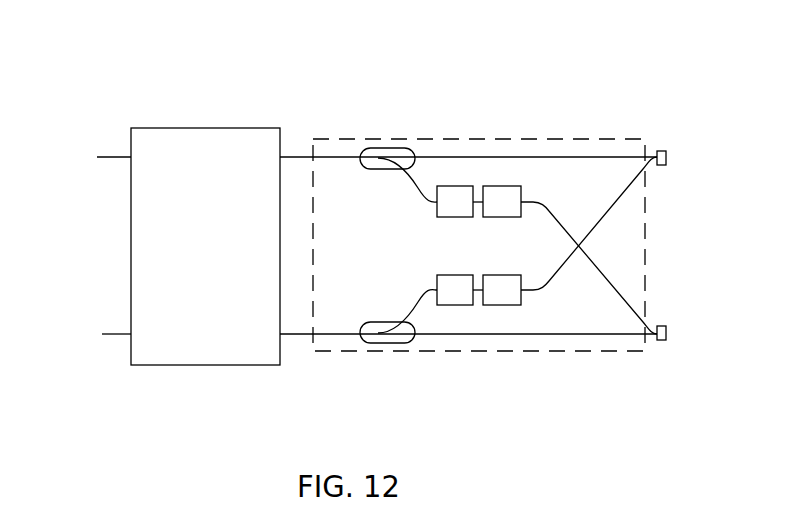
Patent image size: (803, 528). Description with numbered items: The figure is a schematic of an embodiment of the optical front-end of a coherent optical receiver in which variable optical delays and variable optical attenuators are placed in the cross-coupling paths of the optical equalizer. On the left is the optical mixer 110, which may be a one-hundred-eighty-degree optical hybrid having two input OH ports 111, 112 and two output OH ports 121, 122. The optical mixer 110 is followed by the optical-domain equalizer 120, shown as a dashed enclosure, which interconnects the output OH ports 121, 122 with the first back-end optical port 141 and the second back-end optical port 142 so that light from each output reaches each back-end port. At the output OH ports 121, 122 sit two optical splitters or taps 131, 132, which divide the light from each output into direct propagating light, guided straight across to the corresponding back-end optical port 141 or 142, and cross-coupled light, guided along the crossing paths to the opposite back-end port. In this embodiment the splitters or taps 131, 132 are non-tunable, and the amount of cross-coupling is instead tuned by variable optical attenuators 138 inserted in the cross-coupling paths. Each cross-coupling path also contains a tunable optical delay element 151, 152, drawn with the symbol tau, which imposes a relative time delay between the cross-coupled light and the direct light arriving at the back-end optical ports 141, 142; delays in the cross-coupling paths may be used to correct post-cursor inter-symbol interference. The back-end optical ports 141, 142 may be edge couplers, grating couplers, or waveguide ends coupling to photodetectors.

The optical mixer 110 is at (197, 128).
The input OH port 111 is at (125, 163).
The input OH port 112 is at (128, 334).
The optical-domain equalizer 120 is at (523, 139).
The first output OH port 121 is at (288, 157).
The second output OH port 122 is at (287, 340).
The optical splitter or tap 131 is at (410, 148).
The optical splitter or tap 132 is at (410, 347).
The variable optical attenuator 138 is at (455, 217).
The first back-end optical port 141 is at (657, 153).
The second back-end optical port 142 is at (657, 342).
The optical delay element 151 is at (502, 186).
The optical delay element 152 is at (502, 305).